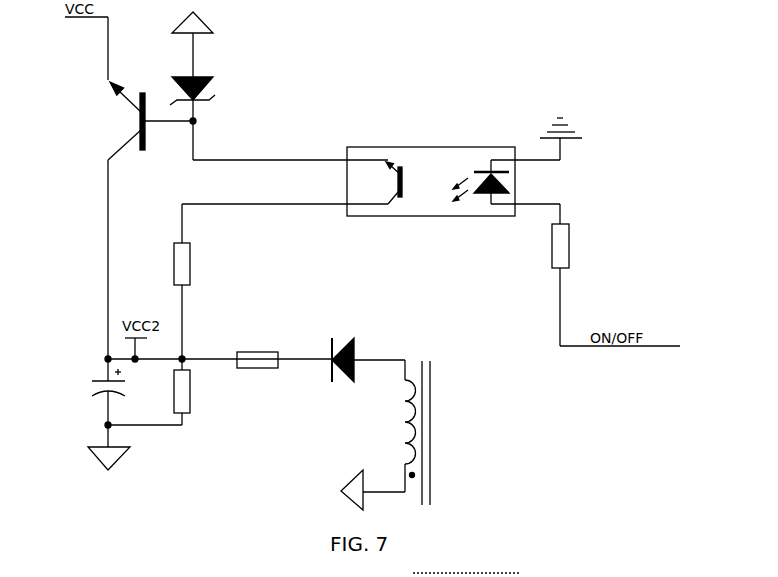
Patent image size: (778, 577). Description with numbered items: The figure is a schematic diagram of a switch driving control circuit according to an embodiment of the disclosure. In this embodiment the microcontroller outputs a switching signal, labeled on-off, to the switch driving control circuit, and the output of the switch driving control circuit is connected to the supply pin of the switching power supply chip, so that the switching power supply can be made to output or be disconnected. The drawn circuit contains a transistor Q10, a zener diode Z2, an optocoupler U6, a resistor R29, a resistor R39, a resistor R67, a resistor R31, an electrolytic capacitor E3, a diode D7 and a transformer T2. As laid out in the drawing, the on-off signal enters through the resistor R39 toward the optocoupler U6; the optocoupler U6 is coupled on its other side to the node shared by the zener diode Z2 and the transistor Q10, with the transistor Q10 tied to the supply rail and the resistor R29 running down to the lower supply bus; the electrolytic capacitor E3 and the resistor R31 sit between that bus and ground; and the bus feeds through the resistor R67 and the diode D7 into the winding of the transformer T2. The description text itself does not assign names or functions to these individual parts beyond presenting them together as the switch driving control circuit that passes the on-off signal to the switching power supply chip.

The transistor Q10 is at (116, 121).
The zener diode Z2 is at (205, 91).
The optocoupler U6 is at (430, 172).
The resistor R29 is at (197, 263).
The resistor R39 is at (576, 246).
The resistor R67 is at (257, 350).
The resistor R31 is at (197, 391).
The electrolytic capacitor E3 is at (91, 392).
The diode D7 is at (341, 350).
The transformer T2 is at (418, 420).